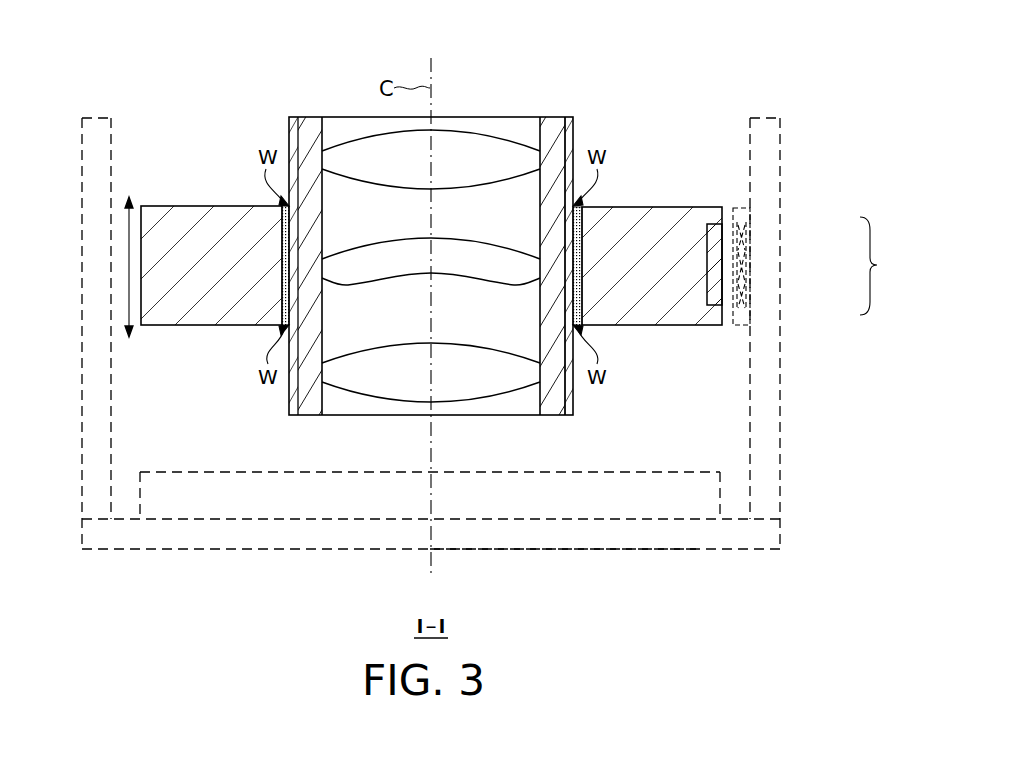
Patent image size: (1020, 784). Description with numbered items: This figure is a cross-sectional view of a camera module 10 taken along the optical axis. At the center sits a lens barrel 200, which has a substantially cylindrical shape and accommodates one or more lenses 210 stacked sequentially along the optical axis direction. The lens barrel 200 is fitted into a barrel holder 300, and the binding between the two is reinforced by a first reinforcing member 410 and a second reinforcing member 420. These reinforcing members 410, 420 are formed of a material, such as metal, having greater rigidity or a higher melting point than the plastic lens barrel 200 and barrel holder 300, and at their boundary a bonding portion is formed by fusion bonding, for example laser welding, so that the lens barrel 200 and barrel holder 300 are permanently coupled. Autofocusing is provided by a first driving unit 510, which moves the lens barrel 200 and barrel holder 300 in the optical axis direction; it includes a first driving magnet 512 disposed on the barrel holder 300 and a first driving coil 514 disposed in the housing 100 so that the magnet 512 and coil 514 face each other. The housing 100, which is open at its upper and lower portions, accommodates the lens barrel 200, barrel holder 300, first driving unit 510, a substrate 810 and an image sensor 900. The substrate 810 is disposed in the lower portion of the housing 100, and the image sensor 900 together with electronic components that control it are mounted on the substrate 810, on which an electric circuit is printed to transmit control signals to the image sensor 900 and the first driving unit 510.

The camera module 10 is at (724, 88).
The housing 100 is at (81, 352).
The lens barrel 200 is at (552, 118).
The lens 210 is at (488, 140).
The barrel holder 300 is at (200, 220).
The first reinforcing member 410 is at (568, 128).
The second reinforcing member 420 is at (583, 260).
The first driving unit 510 is at (887, 266).
The first driving magnet 512 is at (712, 276).
The first driving coil 514 is at (748, 232).
The substrate 810 is at (597, 535).
The image sensor 900 is at (512, 505).